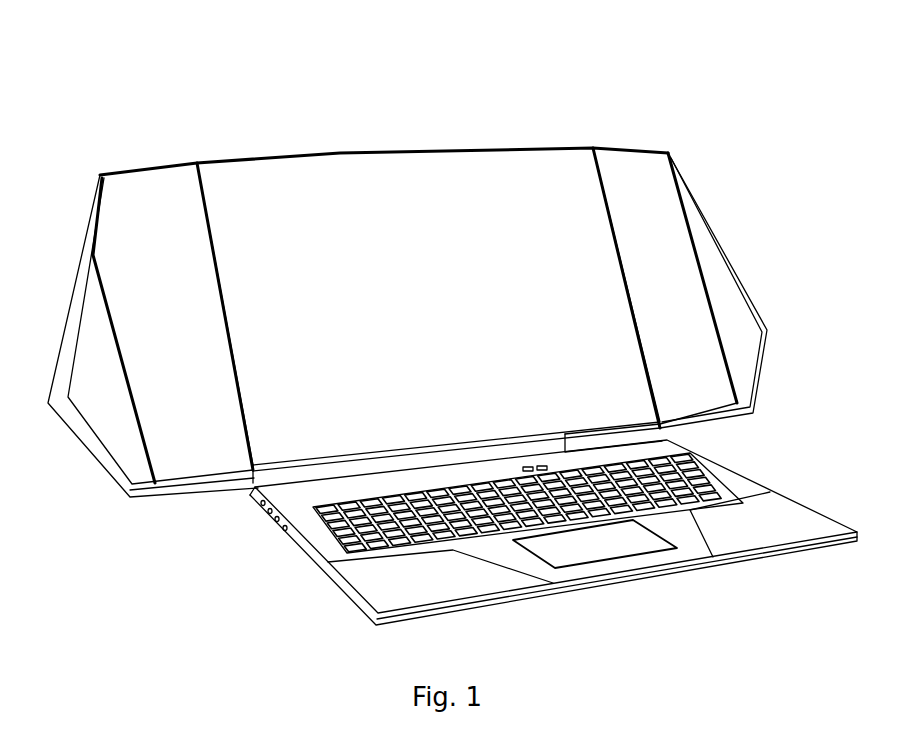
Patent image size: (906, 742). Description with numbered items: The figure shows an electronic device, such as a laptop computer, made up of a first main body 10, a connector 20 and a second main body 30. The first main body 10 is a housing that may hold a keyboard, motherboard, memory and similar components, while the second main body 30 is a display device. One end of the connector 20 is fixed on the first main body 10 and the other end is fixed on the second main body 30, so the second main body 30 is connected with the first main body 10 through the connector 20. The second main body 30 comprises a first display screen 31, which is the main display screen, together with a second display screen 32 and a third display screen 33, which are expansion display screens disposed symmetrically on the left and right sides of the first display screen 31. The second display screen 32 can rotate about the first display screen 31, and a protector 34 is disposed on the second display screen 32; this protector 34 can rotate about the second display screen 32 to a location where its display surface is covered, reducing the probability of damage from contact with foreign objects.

The first main body 10 is at (372, 576).
The connector 20 is at (662, 432).
The second main body 30 is at (175, 97).
The first display screen 31 is at (372, 223).
The second display screen 32 is at (192, 237).
The third display screen 33 is at (623, 177).
The protector 34 is at (107, 292).